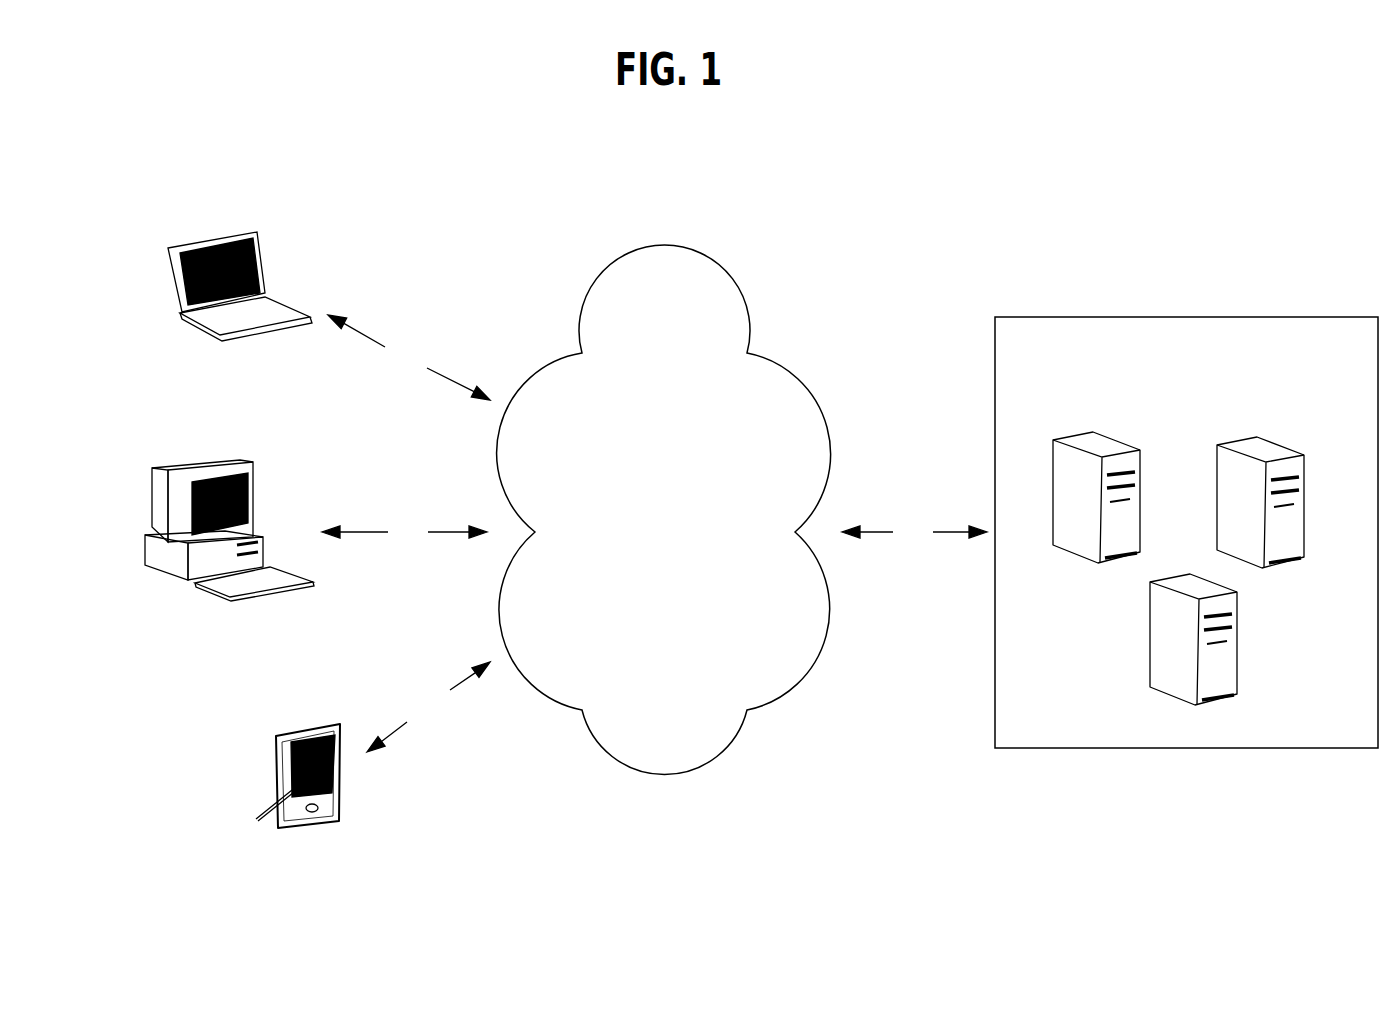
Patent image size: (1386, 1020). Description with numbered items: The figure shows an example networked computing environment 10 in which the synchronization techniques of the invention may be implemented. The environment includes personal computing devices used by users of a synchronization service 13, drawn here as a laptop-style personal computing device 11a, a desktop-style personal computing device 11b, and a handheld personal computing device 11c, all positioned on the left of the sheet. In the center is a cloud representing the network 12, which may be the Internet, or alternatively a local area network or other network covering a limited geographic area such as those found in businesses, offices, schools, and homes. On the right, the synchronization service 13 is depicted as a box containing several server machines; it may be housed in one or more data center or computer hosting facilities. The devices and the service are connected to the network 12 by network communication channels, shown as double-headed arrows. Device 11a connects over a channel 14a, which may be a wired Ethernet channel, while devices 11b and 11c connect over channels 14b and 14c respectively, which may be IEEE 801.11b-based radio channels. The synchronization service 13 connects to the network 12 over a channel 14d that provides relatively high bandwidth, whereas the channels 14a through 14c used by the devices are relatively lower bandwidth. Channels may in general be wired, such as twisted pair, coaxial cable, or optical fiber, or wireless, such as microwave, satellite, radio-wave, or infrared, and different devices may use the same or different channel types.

The networked computing environment 10 is at (672, 146).
The personal computing device 11a is at (238, 232).
The personal computing device 11b is at (228, 460).
The personal computing device 11c is at (308, 723).
The network 12 is at (665, 272).
The synchronization service 13 is at (1198, 377).
The network communication channel 14a is at (422, 370).
The network communication channel 14b is at (425, 539).
The network communication channel 14c is at (443, 720).
The network communication channel 14d is at (914, 532).